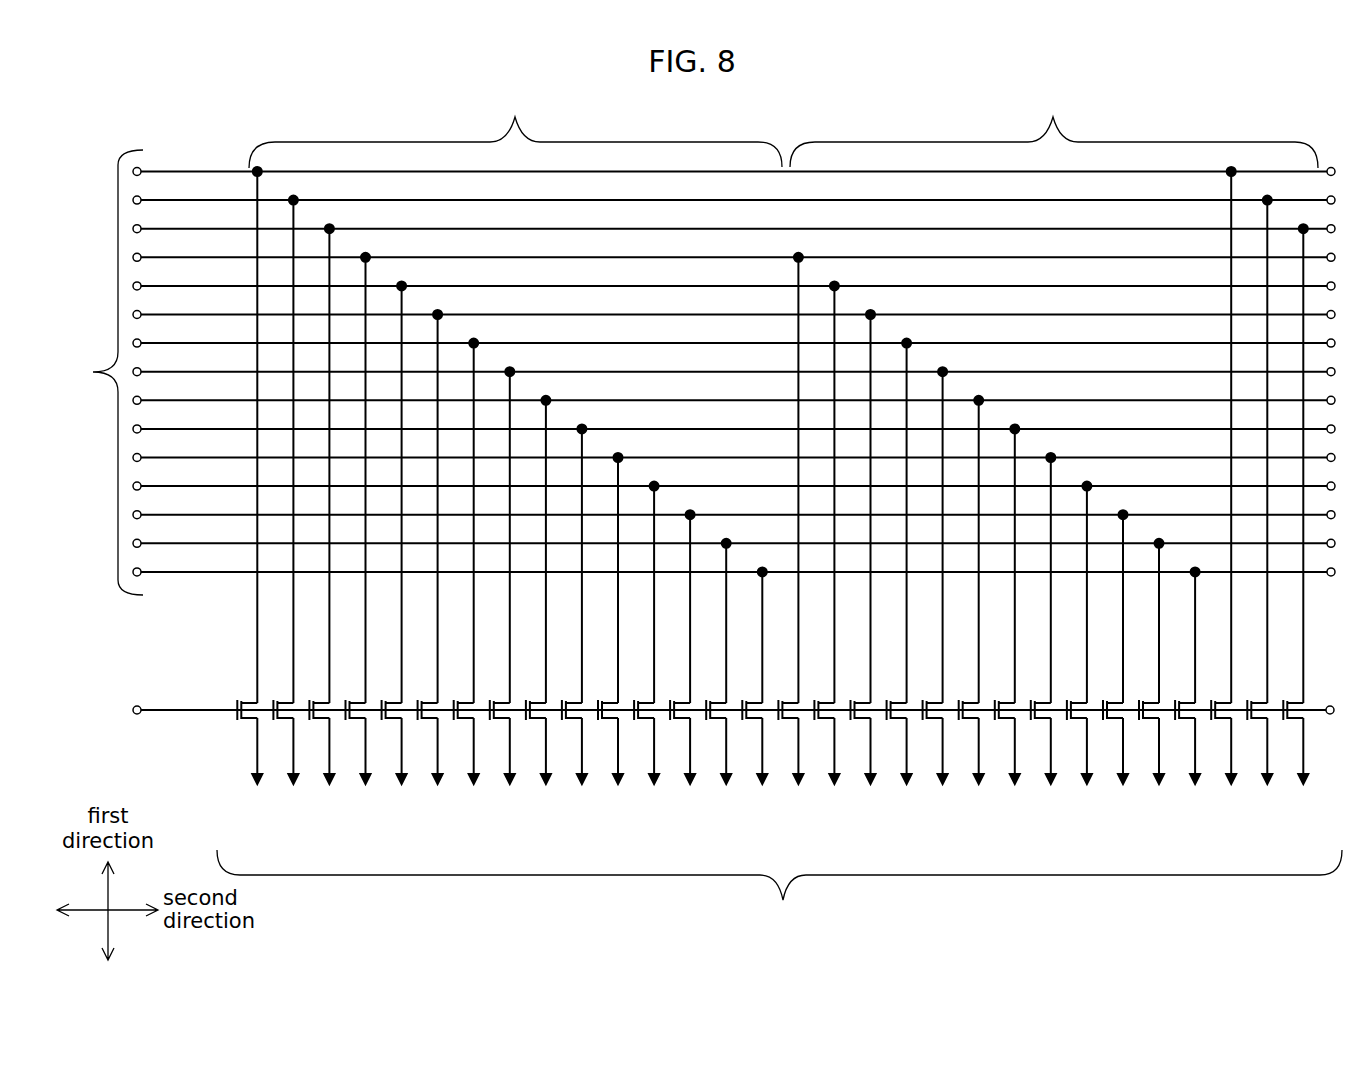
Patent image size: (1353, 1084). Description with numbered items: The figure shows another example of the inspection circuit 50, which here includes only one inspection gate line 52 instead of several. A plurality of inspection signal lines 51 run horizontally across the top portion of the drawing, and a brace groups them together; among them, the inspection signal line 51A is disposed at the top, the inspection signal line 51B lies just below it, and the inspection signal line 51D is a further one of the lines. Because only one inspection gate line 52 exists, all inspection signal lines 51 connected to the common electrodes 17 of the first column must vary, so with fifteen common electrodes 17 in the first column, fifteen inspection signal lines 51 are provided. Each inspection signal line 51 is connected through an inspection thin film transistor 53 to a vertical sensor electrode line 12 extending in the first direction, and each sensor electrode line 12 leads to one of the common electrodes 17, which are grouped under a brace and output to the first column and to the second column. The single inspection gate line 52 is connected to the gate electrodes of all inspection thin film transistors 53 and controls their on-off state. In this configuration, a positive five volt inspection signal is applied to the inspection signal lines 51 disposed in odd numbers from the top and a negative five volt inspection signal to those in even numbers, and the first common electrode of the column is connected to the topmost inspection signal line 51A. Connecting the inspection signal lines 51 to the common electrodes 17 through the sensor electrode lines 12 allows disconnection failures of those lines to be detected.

The inspection circuit 50 is at (1268, 133).
The inspection signal lines 51 is at (694, 372).
The inspection signal line 51A is at (168, 171).
The inspection signal line 51B is at (222, 199).
The inspection signal line 51D is at (181, 257).
The inspection gate line 52 is at (178, 710).
The inspection thin film transistor 53 is at (247, 700).
The sensor electrode line 12 is at (292, 762).
The common electrodes 17 is at (779, 868).